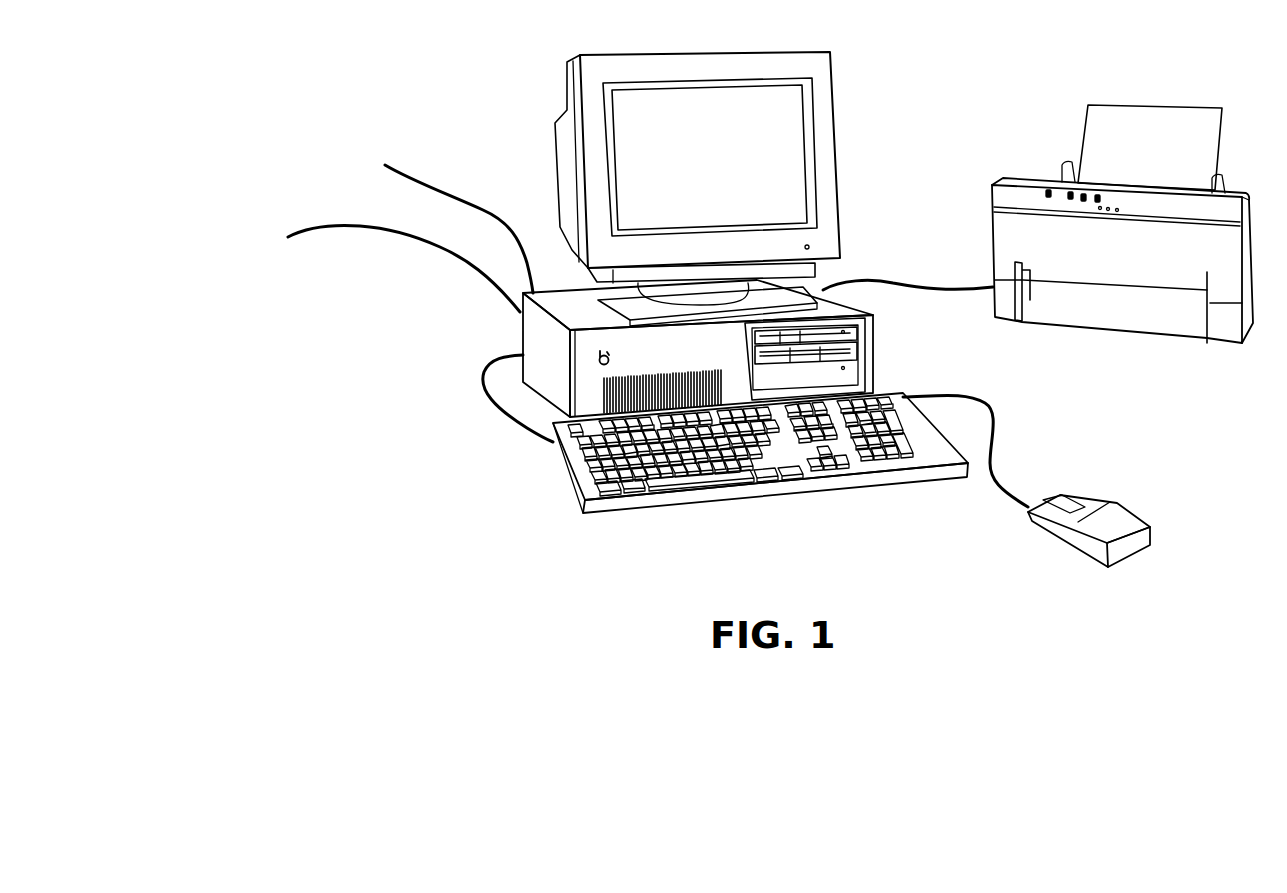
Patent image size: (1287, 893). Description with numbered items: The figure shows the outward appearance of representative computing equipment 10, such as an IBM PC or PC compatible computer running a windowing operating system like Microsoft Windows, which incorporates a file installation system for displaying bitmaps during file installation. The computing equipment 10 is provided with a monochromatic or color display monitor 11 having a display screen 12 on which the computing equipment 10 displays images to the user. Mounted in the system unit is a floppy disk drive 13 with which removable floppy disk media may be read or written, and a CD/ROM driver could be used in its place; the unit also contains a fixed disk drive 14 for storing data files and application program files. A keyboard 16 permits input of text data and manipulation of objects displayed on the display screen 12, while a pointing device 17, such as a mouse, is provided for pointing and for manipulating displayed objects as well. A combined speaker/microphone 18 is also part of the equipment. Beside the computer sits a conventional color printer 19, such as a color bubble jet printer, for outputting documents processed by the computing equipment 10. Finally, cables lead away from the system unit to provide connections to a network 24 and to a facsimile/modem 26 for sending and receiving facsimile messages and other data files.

The computing equipment 10 is at (932, 118).
The display monitor 11 is at (730, 51).
The display screen 12 is at (780, 175).
The floppy disk drive 13 is at (847, 350).
The fixed disk drive 14 is at (833, 375).
The keyboard 16 is at (650, 483).
The pointing device 17 is at (1123, 560).
The combined speaker/microphone 18 is at (603, 398).
The color printer 19 is at (1030, 177).
The network 24 is at (488, 213).
The facsimile/modem 26 is at (393, 232).